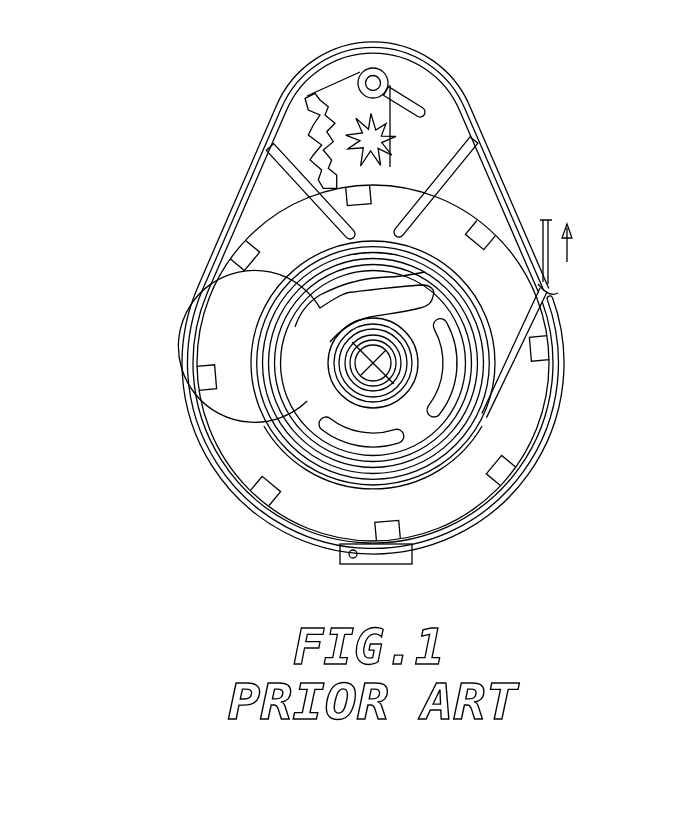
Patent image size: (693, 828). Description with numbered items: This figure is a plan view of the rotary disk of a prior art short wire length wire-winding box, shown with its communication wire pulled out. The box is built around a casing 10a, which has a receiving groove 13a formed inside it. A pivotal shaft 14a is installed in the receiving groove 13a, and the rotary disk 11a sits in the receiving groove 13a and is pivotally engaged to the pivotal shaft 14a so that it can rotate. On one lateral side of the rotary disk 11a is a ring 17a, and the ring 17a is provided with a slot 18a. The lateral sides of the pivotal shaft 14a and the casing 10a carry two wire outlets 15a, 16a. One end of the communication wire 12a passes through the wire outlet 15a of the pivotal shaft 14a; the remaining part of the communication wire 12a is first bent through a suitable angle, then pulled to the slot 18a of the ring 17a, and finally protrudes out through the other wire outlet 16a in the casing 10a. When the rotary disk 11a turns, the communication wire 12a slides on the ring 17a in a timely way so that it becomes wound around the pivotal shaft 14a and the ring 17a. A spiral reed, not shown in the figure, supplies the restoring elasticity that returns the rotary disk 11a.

The casing 10a is at (187, 328).
The rotary disk 11a is at (257, 465).
The communication wire 12a is at (478, 423).
The receiving groove 13a is at (270, 188).
The pivotal shaft 14a is at (210, 376).
The wire outlet 15a is at (210, 376).
The wire outlet 16a is at (560, 295).
The ring 17a is at (447, 345).
The slot 18a is at (440, 308).